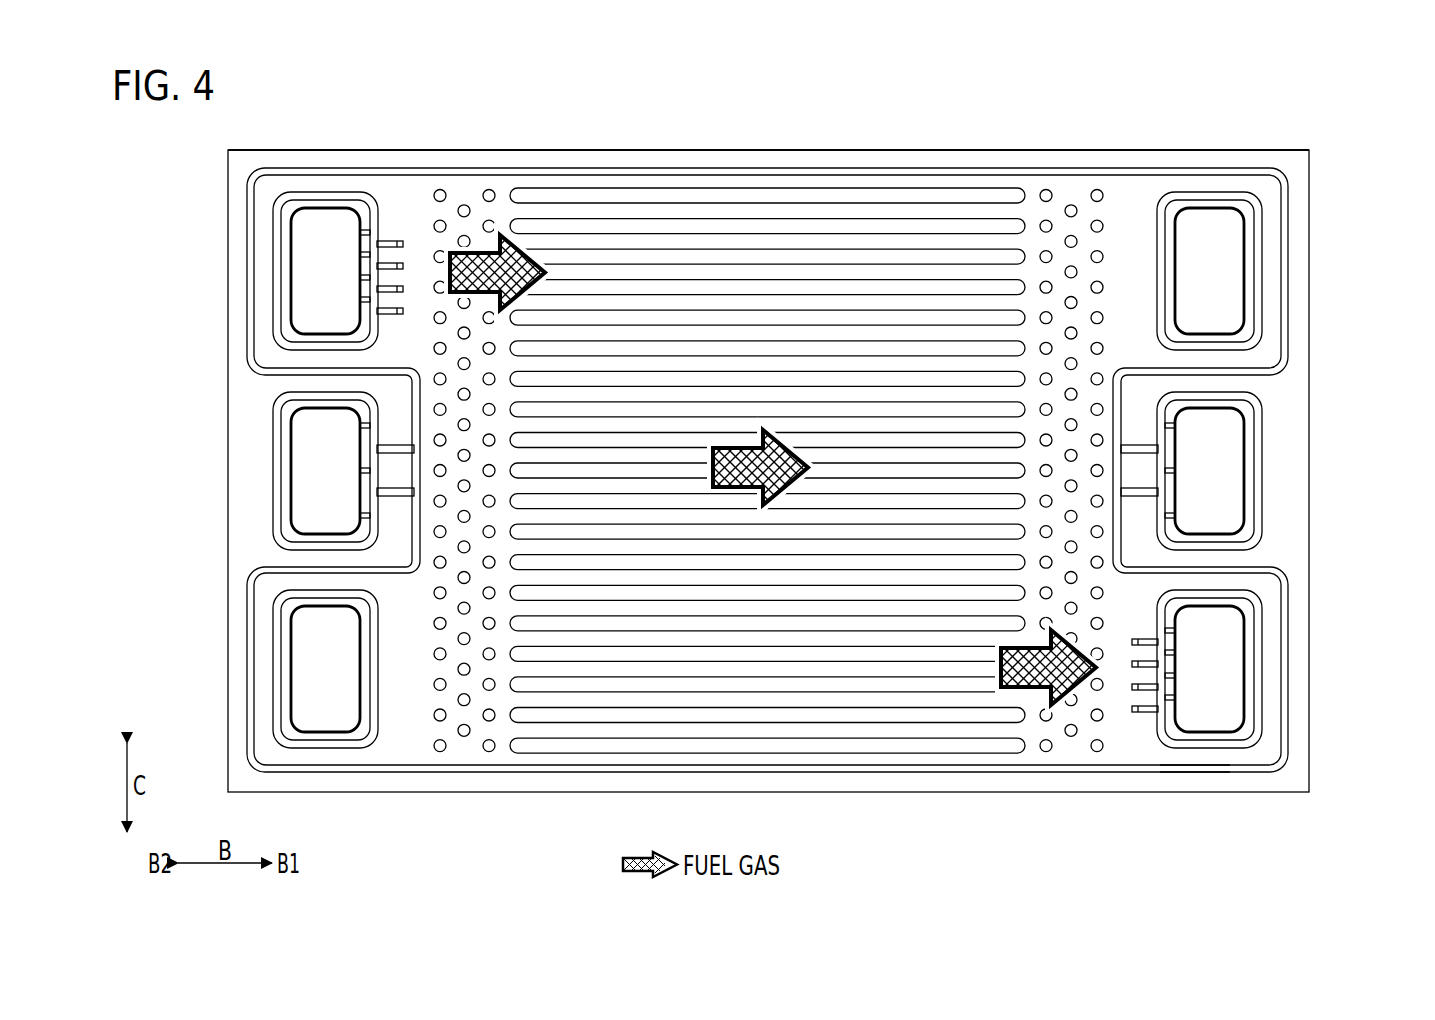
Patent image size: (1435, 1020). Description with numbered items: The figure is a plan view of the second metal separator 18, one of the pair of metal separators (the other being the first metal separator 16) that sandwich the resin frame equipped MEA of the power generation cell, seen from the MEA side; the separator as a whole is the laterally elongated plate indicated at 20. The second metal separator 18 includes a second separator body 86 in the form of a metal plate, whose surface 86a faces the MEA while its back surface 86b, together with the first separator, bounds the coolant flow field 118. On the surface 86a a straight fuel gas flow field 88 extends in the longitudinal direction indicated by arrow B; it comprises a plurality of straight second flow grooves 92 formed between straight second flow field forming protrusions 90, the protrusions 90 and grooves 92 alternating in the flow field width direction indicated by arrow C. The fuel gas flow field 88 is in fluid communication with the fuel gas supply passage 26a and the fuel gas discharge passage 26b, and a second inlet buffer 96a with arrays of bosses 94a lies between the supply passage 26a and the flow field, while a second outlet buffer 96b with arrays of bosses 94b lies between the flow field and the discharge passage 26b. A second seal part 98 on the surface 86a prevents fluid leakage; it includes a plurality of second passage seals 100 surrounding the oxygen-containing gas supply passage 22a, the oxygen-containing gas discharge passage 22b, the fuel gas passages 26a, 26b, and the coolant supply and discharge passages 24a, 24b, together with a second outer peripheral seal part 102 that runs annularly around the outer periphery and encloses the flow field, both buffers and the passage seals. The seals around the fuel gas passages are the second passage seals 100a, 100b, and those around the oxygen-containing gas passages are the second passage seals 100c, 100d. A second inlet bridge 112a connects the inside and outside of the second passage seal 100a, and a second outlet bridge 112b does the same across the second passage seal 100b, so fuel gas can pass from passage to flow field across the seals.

The separator 20 is at (1283, 99).
The second metal separator 18 is at (285, 147).
The first metal separator 16 is at (349, 147).
The second separator body 86 is at (767, 421).
The surface 86a is at (626, 163).
The back surface 86b is at (684, 165).
The fuel gas flow field 88 is at (767, 472).
The second flow grooves 92 is at (767, 472).
The second flow field forming protrusions 90 is at (873, 197).
The coolant flow field 118 is at (556, 726).
The bosses 94a is at (491, 415).
The second inlet buffer 96a is at (489, 189).
The bosses 94b is at (1095, 425).
The second outlet buffer 96b is at (1097, 189).
The fuel gas supply passage 26a is at (303, 237).
The fuel gas discharge passage 26b is at (1228, 688).
The oxygen-containing gas supply passage 22a is at (1222, 243).
The oxygen-containing gas discharge passage 22b is at (303, 635).
The coolant supply passage 24a is at (1228, 477).
The coolant discharge passage 24b is at (318, 483).
The second passage seals 100 is at (277, 424).
The second passage seal 100a is at (268, 268).
The second passage seal 100b is at (1236, 746).
The second passage seal 100c is at (1262, 258).
The second passage seal 100d is at (268, 662).
The second inlet bridge 112a is at (391, 228).
The second outlet bridge 112b is at (1140, 731).
The second outer peripheral seal part 102 is at (1195, 803).
The second seal part 98 is at (1251, 734).